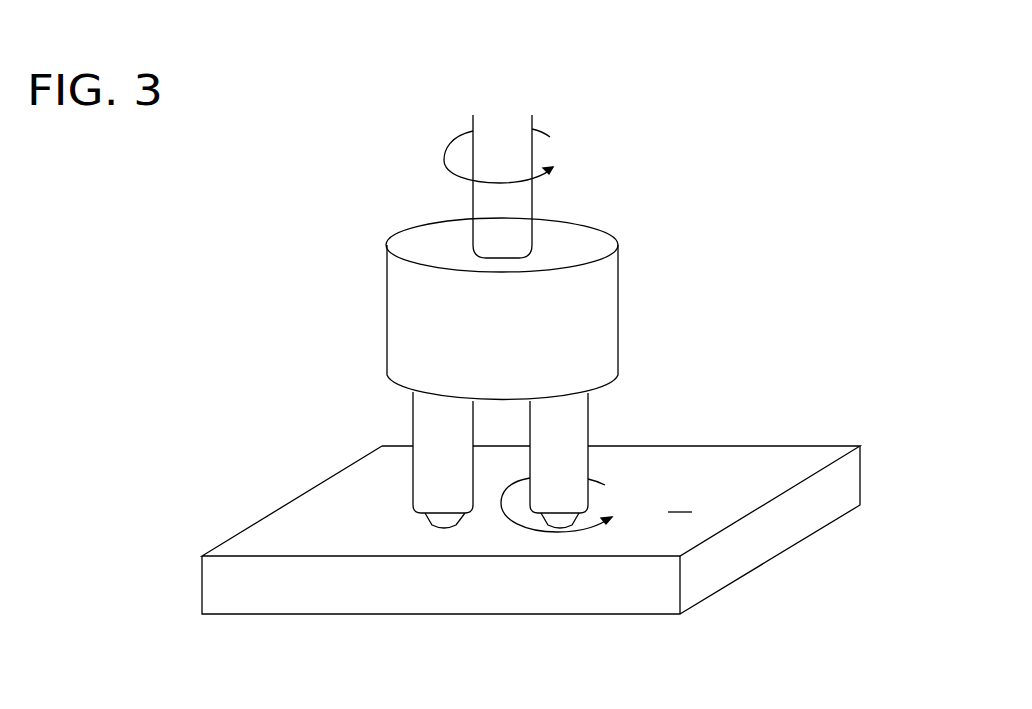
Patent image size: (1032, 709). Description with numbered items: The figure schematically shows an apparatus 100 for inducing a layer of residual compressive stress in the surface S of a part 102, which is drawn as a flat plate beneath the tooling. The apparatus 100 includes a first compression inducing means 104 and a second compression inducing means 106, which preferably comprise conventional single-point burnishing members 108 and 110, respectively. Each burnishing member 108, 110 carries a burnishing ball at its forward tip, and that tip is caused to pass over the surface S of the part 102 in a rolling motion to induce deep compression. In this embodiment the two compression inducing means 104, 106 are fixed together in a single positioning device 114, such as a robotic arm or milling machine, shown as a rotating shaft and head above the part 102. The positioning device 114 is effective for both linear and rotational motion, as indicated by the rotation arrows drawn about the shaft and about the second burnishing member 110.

The apparatus 100 is at (772, 198).
The part 102 is at (272, 543).
The first compression inducing means 104 is at (388, 437).
The second compression inducing means 106 is at (618, 413).
The burnishing member 108 is at (422, 467).
The burnishing member 110 is at (583, 467).
The single positioning device 114 is at (508, 214).